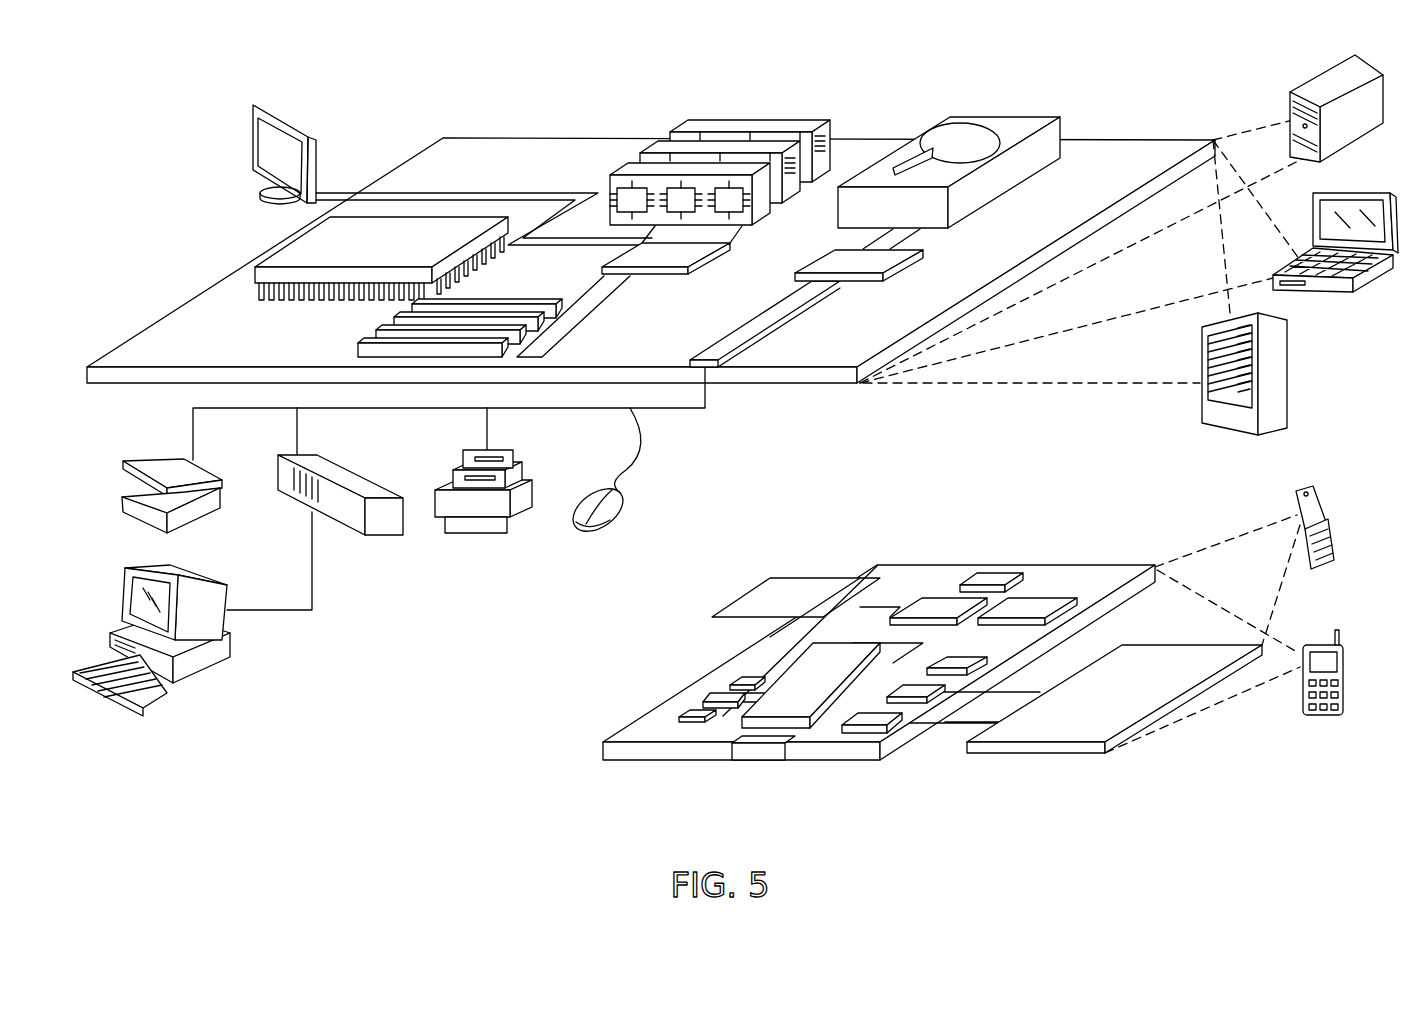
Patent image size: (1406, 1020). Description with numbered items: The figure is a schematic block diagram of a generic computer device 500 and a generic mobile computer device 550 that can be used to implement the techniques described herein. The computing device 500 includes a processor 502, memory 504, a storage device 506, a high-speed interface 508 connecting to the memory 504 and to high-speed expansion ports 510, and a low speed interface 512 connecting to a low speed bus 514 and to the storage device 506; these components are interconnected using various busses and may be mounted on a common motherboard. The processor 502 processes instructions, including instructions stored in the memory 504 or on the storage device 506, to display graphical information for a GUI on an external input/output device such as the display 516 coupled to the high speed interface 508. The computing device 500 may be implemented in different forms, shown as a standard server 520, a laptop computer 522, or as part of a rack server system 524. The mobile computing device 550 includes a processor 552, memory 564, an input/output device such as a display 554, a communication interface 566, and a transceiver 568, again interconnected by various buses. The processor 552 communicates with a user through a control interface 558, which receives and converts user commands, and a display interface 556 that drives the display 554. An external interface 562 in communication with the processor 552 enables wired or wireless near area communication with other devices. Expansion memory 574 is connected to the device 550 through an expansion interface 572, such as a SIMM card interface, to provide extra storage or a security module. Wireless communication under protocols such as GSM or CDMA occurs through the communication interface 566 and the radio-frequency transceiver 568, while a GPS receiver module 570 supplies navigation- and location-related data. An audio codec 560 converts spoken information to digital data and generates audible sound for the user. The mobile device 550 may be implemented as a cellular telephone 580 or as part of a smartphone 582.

The computing device 500 is at (391, 80).
The processor 502 is at (283, 247).
The memory 504 is at (752, 133).
The storage device 506 is at (993, 114).
The high-speed interface 508 is at (678, 252).
The high-speed expansion ports 510 is at (384, 328).
The low speed interface 512 is at (832, 258).
The low speed bus 514 is at (713, 352).
The display 516 is at (256, 106).
The standard server 520 is at (1312, 84).
The laptop computer 522 is at (1372, 192).
The rack server system 524 is at (1288, 373).
The mobile computer device 550 is at (556, 771).
The processor 552 is at (800, 692).
The display 554 is at (1153, 658).
The display interface 556 is at (893, 718).
The control interface 558 is at (925, 690).
The audio codec 560 is at (963, 656).
The external interface 562 is at (757, 744).
The memory 564 is at (710, 694).
The communication interface 566 is at (938, 600).
The transceiver 568 is at (1035, 602).
The GPS receiver module 570 is at (993, 576).
The expansion interface 572 is at (860, 576).
The expansion memory 574 is at (773, 576).
The cellular telephone 580 is at (1308, 486).
The smartphone 582 is at (1320, 644).